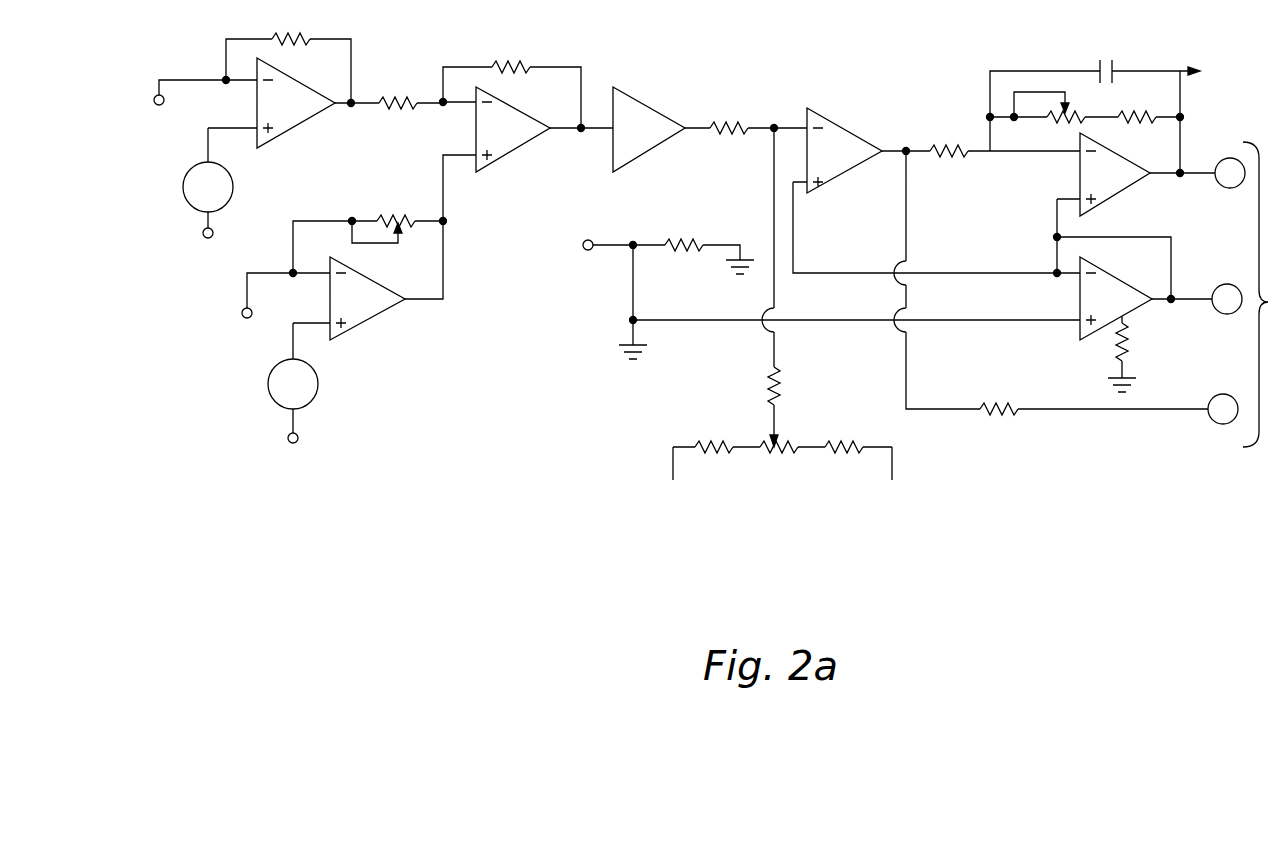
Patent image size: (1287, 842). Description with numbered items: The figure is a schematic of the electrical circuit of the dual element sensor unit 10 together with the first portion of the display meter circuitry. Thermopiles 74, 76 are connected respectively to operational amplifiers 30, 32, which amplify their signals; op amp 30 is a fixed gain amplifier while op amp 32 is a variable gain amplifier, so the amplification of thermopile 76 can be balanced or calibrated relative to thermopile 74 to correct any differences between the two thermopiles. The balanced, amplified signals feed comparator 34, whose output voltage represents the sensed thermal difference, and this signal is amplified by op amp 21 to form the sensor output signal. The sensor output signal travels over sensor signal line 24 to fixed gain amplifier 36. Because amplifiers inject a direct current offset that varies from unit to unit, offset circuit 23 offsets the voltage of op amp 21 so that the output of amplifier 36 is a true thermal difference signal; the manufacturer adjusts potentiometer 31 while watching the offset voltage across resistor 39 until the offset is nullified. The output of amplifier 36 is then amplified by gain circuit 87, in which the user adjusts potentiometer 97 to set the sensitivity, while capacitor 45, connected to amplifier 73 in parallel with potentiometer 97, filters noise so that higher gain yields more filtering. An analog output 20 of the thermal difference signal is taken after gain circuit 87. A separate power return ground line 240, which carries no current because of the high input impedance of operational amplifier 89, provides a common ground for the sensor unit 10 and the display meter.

The dual element sensor unit 10 is at (491, 483).
The operational amplifier 30 is at (275, 113).
The thermopile 74 is at (190, 203).
The operational amplifier 32 is at (348, 309).
The thermopile 76 is at (276, 402).
The comparator 34 is at (528, 143).
The op amp 21 is at (625, 138).
The sensor signal line 24 is at (700, 131).
The power return ground line 240 is at (724, 323).
The potentiometer 31 is at (791, 389).
The offset circuit 23 is at (765, 497).
The fixed gain amplifier 36 is at (844, 150).
The gain circuit 87 is at (958, 97).
The capacitor 45 is at (1120, 63).
The potentiometer 97 is at (1058, 103).
The analog output 20 is at (1173, 72).
The amplifier 73 is at (1095, 183).
The operational amplifier 89 is at (1095, 309).
The resistor 39 is at (999, 395).